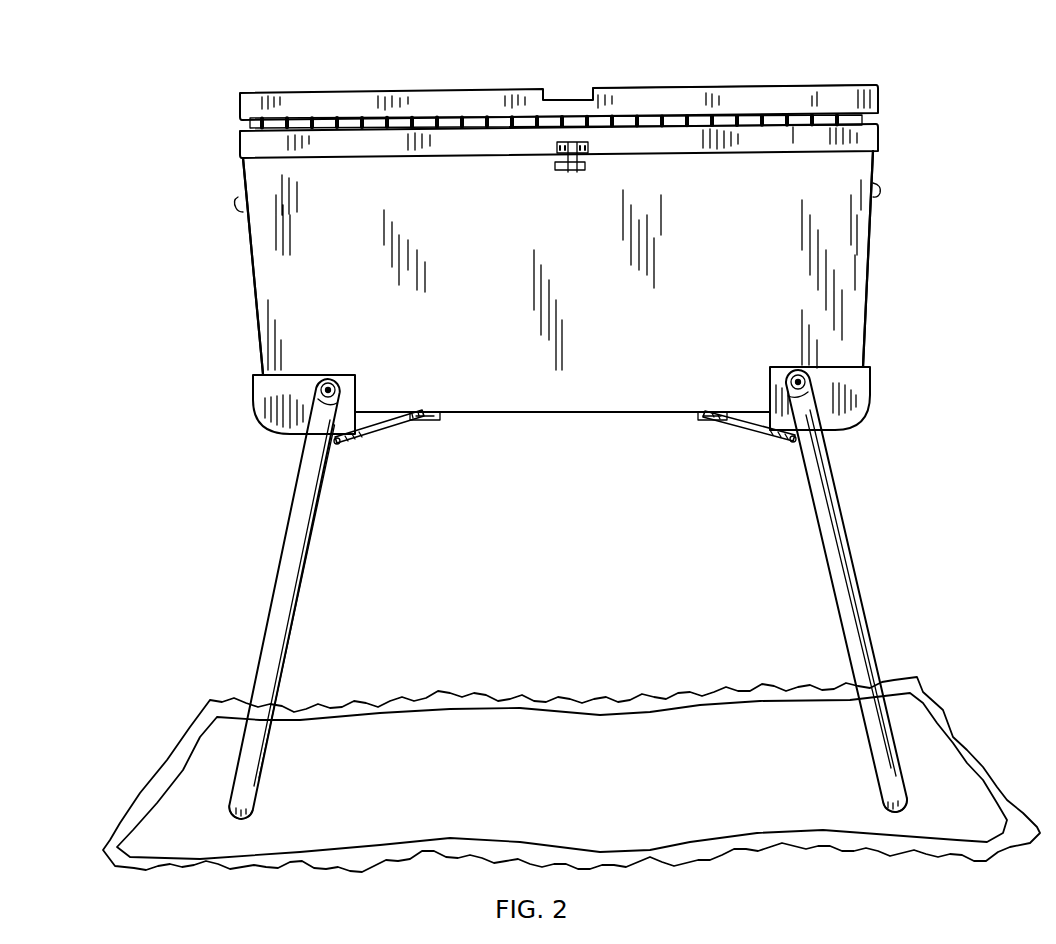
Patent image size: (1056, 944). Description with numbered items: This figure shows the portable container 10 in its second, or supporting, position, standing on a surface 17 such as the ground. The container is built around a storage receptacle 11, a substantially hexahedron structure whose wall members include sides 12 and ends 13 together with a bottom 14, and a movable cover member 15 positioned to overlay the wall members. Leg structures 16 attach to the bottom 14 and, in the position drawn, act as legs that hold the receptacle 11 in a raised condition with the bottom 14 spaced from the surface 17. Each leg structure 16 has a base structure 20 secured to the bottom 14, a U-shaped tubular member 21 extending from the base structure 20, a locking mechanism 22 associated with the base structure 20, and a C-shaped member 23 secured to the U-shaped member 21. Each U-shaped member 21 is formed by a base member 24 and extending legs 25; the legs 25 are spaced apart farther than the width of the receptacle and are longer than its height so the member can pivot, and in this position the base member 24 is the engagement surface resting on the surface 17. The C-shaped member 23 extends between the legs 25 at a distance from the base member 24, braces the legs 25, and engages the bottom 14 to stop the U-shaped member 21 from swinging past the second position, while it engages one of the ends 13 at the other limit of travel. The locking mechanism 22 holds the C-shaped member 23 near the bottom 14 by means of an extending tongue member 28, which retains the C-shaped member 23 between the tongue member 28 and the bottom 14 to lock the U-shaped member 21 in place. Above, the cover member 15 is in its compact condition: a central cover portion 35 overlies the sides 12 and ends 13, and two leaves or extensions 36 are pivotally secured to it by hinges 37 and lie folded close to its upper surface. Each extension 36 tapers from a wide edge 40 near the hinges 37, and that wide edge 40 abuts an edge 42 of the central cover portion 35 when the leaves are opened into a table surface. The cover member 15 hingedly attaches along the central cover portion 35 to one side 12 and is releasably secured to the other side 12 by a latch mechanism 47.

The portable container 10 is at (984, 189).
The storage receptacle 11 is at (203, 253).
The sides 12 is at (603, 360).
The ends 13 is at (257, 340).
The bottom 14 is at (533, 413).
The cover member 15 is at (573, 128).
The leg structures 16 is at (561, 602).
The surface 17 is at (563, 818).
The base structure 20 is at (266, 430).
The U-shaped tubular members 21 is at (288, 640).
The locking mechanism 22 is at (410, 442).
The C-shaped member 23 is at (343, 444).
The base member 24 is at (245, 820).
The legs 25 is at (300, 577).
The tongue member 28 is at (424, 414).
The central cover portion 35 is at (878, 142).
The extensions 36 is at (721, 86).
The hinges 37 is at (466, 126).
The wide edge 40 is at (340, 100).
The edge 42 is at (240, 152).
The latch mechanism 47 is at (562, 175).